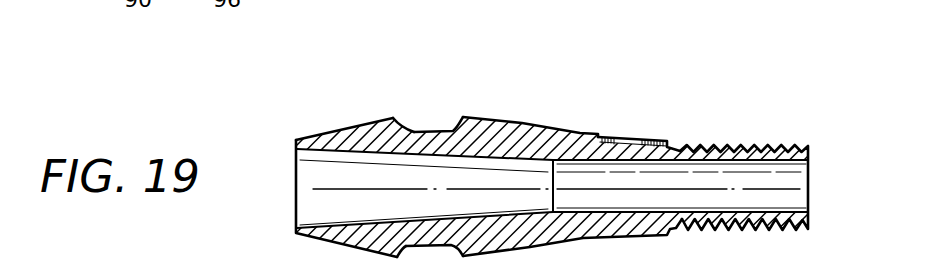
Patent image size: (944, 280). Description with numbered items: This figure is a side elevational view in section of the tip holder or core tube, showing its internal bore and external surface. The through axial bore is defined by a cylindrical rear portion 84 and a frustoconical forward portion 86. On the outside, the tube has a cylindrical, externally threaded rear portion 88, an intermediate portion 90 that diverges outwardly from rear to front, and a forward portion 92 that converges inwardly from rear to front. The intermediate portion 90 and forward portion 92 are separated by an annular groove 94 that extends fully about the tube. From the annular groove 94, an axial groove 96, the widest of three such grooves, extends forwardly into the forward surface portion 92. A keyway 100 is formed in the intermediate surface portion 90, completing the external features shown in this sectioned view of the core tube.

The cylindrical rear portion of the axial bore 84 is at (797, 188).
The frustoconical forward portion of the axial bore 86 is at (310, 203).
The externally threaded rear portion 88 is at (742, 146).
The intermediate portion 90 is at (476, 119).
The forward portion 92 is at (346, 87).
The annular groove 94 is at (430, 118).
The axial groove 96 is at (373, 123).
The keyway 100 is at (622, 130).